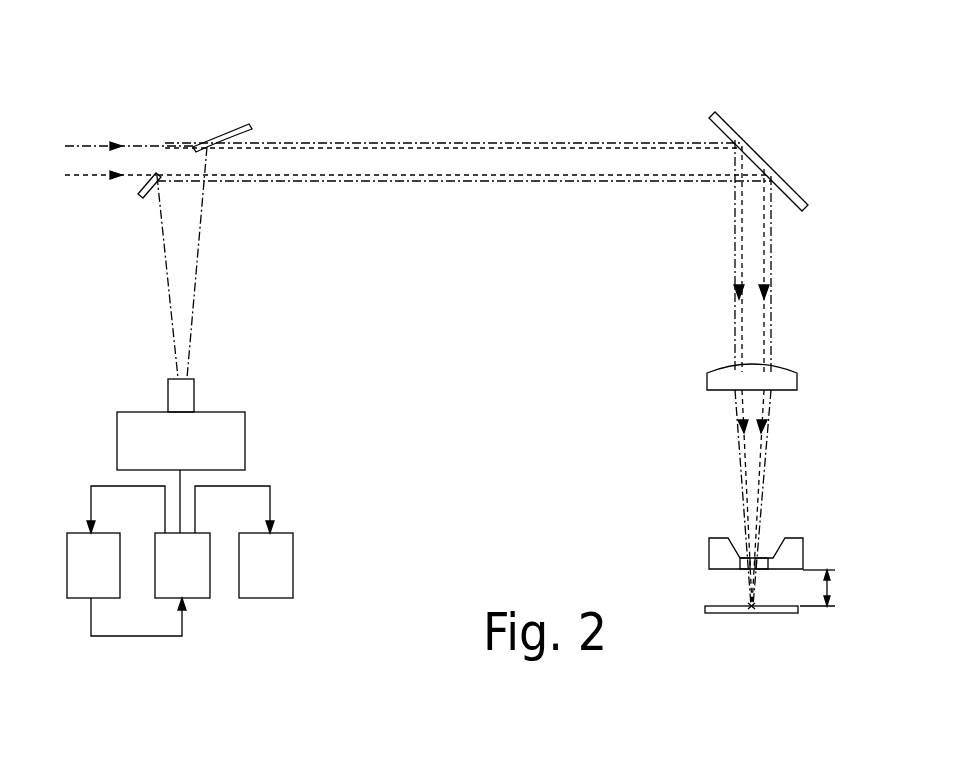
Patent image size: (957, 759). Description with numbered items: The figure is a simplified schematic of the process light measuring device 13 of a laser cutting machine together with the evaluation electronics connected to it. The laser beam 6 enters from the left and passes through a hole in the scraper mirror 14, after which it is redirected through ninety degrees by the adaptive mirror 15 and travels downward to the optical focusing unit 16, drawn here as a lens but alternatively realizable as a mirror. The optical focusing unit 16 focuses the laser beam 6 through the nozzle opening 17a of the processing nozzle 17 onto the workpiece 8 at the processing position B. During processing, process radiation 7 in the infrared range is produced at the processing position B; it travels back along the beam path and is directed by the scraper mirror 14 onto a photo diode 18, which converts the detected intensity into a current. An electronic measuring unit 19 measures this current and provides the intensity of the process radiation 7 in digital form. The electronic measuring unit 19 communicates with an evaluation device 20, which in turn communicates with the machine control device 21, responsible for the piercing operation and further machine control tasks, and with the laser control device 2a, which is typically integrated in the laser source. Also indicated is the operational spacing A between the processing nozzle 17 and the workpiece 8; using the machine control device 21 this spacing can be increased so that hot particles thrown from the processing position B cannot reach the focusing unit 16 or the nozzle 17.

The laser control device 2a is at (83, 580).
The laser beam 6 is at (78, 146).
The process radiation 7 is at (203, 213).
The workpiece 8 is at (783, 612).
The process light measuring device 13 is at (367, 112).
The scraper mirror 14 is at (213, 137).
The adaptive mirror 15 is at (752, 158).
The optical focusing unit 16 is at (787, 378).
The processing nozzle 17 is at (791, 525).
The nozzle opening 17a is at (765, 557).
The photo diode 18 is at (183, 395).
The electronic measuring unit 19 is at (128, 445).
The evaluation device 20 is at (193, 580).
The machine control device 21 is at (280, 580).
The operational spacing A is at (831, 588).
The processing position B is at (750, 605).